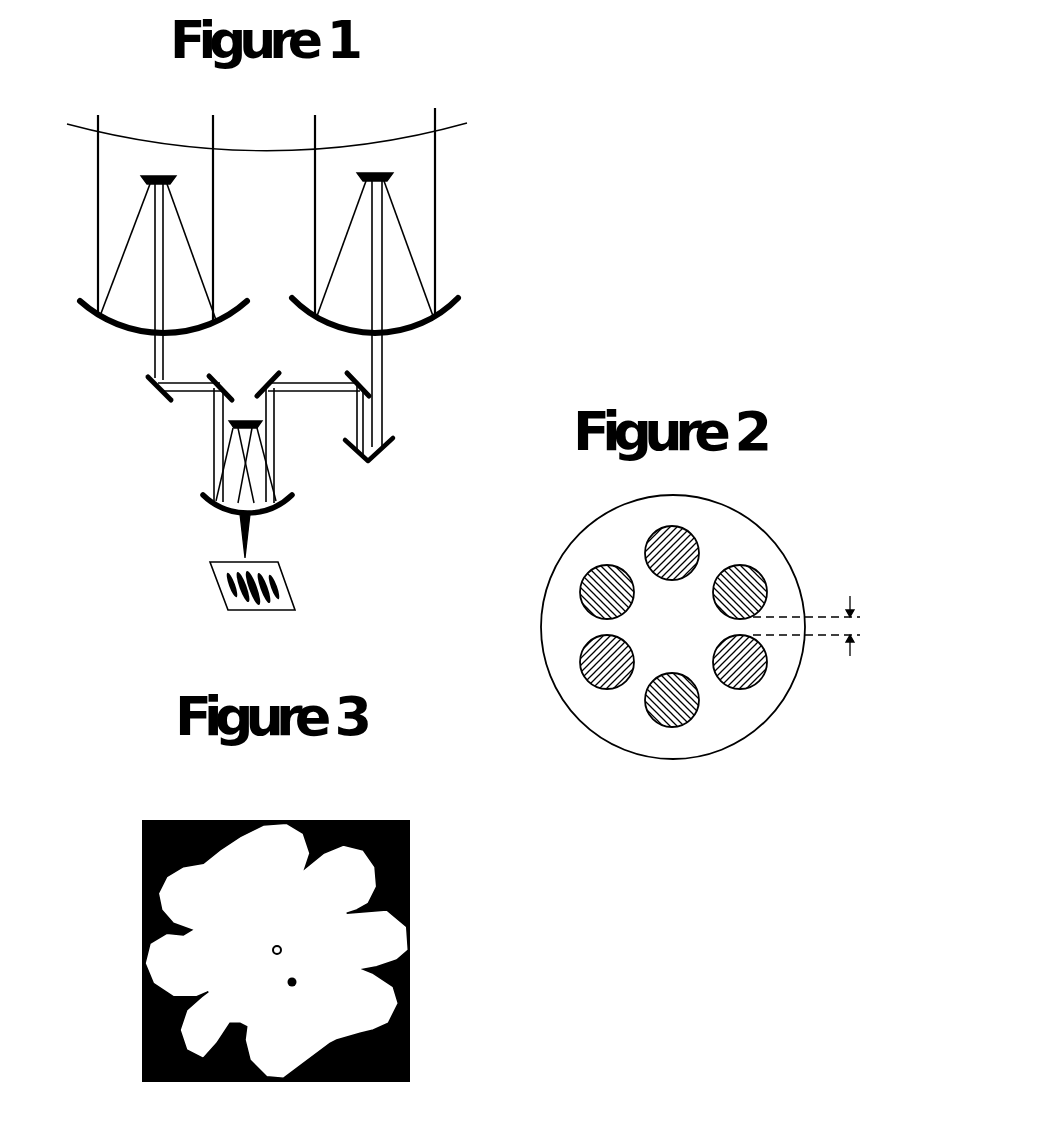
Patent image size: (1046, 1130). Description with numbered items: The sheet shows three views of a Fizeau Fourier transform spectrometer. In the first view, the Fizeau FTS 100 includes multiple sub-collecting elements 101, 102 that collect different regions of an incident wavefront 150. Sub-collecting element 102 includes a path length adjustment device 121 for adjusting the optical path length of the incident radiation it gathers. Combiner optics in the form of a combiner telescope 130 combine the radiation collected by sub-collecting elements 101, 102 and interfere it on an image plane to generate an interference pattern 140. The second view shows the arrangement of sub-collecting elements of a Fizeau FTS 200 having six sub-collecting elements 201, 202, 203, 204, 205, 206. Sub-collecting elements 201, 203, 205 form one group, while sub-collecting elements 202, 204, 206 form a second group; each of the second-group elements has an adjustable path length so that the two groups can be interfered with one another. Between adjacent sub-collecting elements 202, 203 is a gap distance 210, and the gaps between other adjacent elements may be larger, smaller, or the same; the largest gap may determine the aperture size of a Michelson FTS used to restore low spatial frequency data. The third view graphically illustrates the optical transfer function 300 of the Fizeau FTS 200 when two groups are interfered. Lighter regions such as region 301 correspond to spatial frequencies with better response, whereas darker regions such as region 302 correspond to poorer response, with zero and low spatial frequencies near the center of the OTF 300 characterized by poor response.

In FIG. 1, the Fizeau Fourier transform spectrometer 100 is at (556, 262).
In FIG. 1, the sub-collecting element 101 is at (85, 312).
In FIG. 1, the sub-collecting element 102 is at (456, 311).
In FIG. 1, the path length adjustment device 121 is at (380, 452).
In FIG. 1, the combiner telescope 130 is at (192, 420).
In FIG. 1, the interference pattern 140 is at (217, 580).
In FIG. 1, the incident wavefront 150 is at (467, 125).
In FIG. 2, the Fizeau FTS 200 is at (715, 753).
In FIG. 2, the sub-collecting element 201 is at (694, 541).
In FIG. 2, the sub-collecting element 202 is at (763, 578).
In FIG. 2, the sub-collecting element 203 is at (761, 678).
In FIG. 2, the sub-collecting element 204 is at (680, 726).
In FIG. 2, the sub-collecting element 205 is at (588, 680).
In FIG. 2, the sub-collecting element 206 is at (579, 585).
In FIG. 2, the gap distance 210 is at (863, 617).
In FIG. 3, the optical transfer function 300 is at (431, 934).
In FIG. 3, the region 301 is at (292, 982).
In FIG. 3, the region 302 is at (283, 947).